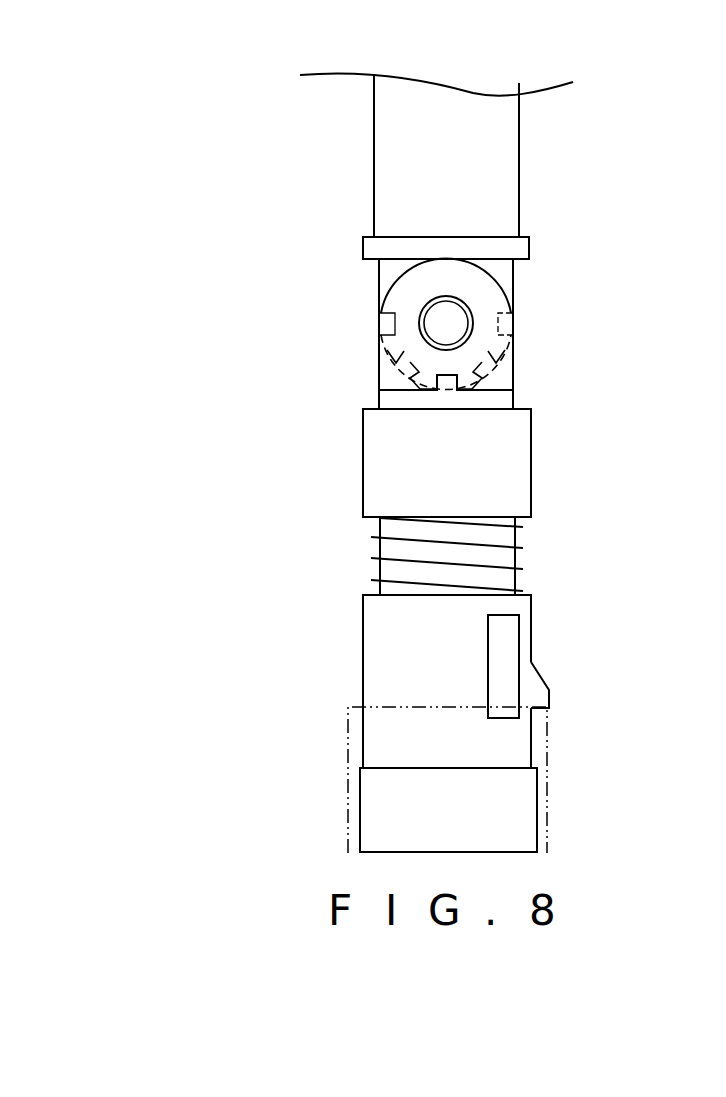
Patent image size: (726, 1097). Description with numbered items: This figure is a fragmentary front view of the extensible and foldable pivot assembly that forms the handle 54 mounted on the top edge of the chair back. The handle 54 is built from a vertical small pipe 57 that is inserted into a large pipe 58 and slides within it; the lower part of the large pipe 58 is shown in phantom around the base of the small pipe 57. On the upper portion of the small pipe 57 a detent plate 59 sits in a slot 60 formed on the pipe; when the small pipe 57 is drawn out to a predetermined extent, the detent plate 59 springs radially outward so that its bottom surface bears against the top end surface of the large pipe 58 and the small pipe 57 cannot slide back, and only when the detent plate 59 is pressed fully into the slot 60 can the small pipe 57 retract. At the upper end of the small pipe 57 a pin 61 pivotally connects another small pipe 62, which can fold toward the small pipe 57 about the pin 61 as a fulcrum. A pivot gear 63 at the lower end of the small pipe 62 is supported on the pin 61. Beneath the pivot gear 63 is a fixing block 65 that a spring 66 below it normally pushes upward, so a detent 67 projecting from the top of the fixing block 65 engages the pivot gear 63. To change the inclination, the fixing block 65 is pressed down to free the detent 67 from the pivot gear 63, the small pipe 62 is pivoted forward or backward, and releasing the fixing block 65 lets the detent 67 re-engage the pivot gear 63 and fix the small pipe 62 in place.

The extensible and foldable handle 54 is at (284, 230).
The small pipe 57 is at (380, 625).
The large pipe 58 is at (353, 727).
The detent plate 59 is at (538, 695).
The slot 60 is at (490, 678).
The pin 61 is at (440, 323).
The small pipe 62 is at (380, 190).
The pivot gear 63 is at (513, 320).
The fixing block 65 is at (503, 433).
The spring 66 is at (513, 548).
The detent 67 is at (447, 388).